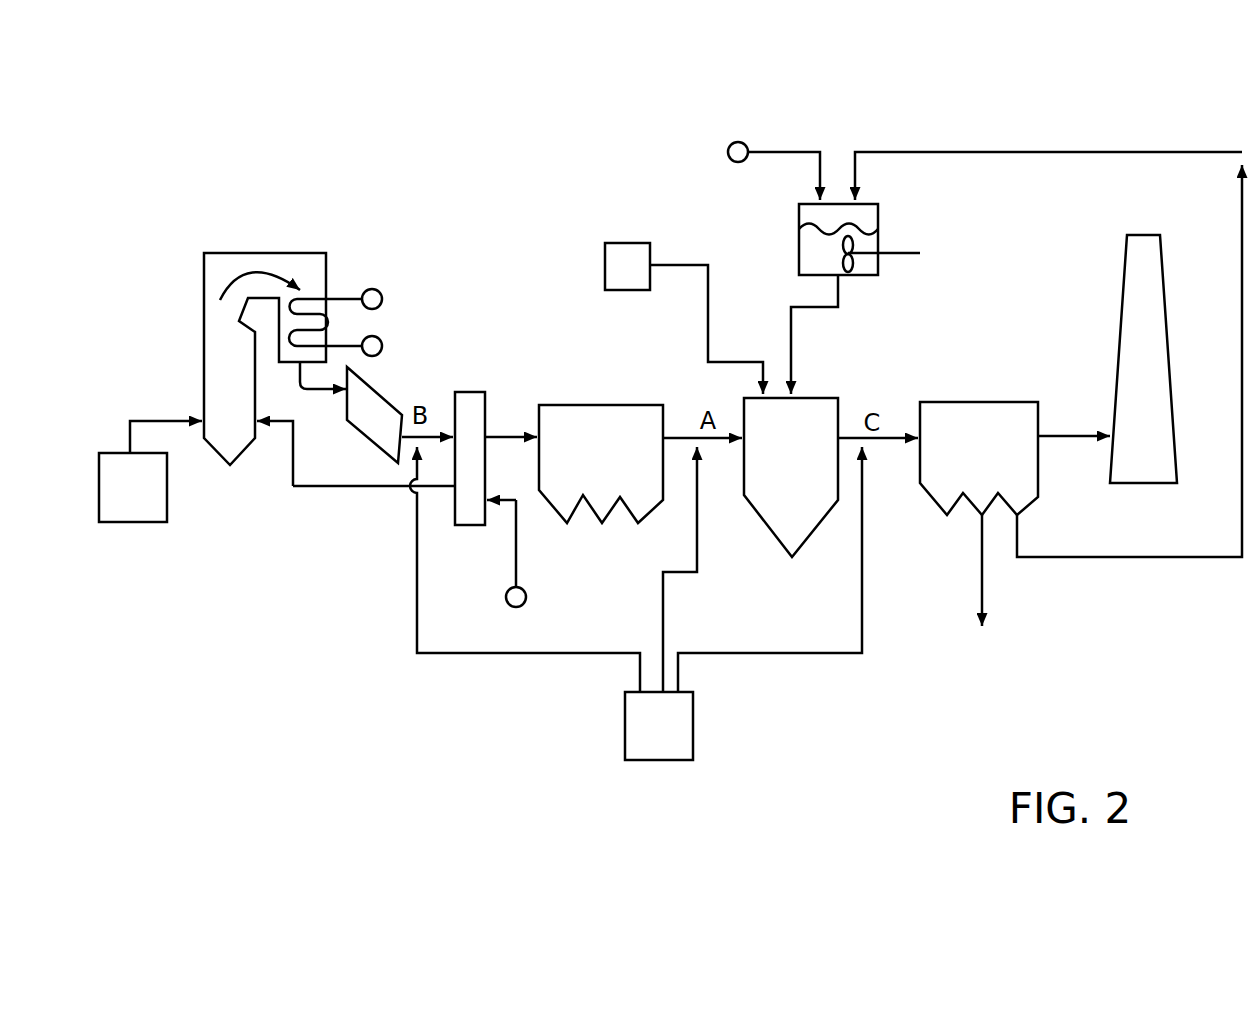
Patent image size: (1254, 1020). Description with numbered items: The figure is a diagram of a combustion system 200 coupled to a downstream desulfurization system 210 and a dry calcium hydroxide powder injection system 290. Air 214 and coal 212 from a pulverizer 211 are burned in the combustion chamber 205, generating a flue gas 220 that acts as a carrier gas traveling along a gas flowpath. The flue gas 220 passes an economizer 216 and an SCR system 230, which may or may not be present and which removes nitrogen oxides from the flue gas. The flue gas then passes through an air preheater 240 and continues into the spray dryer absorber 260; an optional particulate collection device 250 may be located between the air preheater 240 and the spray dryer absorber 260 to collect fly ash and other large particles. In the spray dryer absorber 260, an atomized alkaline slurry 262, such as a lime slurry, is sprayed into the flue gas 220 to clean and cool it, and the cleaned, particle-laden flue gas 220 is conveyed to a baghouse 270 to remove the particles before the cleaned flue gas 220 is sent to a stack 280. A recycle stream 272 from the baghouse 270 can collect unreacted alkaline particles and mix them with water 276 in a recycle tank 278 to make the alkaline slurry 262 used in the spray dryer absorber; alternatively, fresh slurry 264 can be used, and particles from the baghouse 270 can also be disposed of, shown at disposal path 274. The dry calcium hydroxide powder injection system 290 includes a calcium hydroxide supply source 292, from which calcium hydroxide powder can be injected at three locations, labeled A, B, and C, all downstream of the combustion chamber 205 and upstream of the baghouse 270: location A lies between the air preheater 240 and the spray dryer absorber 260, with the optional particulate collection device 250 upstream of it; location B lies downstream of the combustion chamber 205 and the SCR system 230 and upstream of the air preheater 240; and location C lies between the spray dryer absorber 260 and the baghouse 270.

The combustion system 200 is at (200, 212).
The combustion chamber 205 is at (223, 360).
The desulfurization system 210 is at (598, 212).
The pulverizer 211 is at (132, 523).
The coal 212 is at (160, 420).
The air 214 is at (358, 488).
The economizer 216 is at (347, 297).
The flue gas 220 is at (239, 268).
The SCR system 230 is at (365, 385).
The air preheater 240 is at (468, 392).
The particulate collection device 250 is at (581, 460).
The spray dryer absorber 260 is at (771, 455).
The alkaline slurry 262 is at (785, 345).
The fresh slurry 264 is at (680, 268).
The baghouse 270 is at (956, 460).
The recycle stream 272 is at (1093, 557).
The disposal of particles 274 is at (950, 593).
The water 276 is at (772, 148).
The recycle tank 278 is at (793, 237).
The stack 280 is at (1123, 460).
The dry calcium hydroxide powder injection system 290 is at (692, 768).
The calcium hydroxide supply source 292 is at (622, 715).